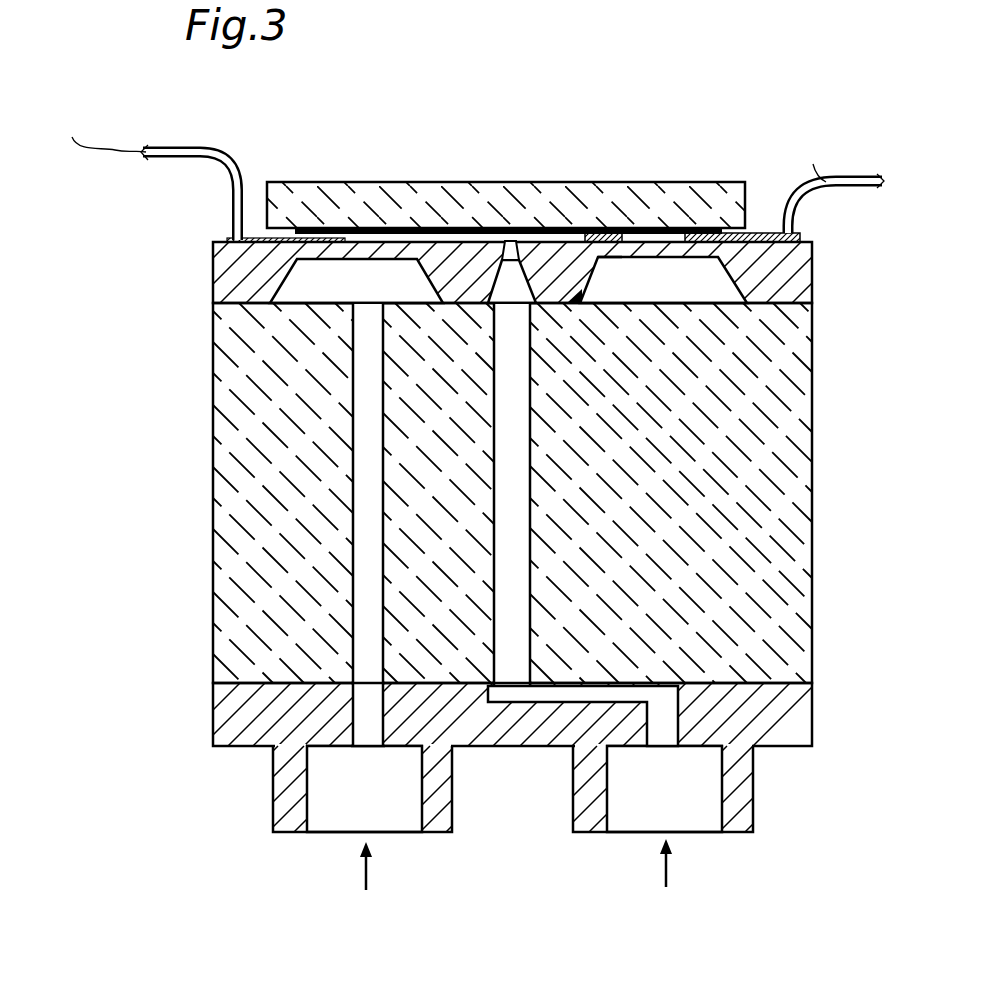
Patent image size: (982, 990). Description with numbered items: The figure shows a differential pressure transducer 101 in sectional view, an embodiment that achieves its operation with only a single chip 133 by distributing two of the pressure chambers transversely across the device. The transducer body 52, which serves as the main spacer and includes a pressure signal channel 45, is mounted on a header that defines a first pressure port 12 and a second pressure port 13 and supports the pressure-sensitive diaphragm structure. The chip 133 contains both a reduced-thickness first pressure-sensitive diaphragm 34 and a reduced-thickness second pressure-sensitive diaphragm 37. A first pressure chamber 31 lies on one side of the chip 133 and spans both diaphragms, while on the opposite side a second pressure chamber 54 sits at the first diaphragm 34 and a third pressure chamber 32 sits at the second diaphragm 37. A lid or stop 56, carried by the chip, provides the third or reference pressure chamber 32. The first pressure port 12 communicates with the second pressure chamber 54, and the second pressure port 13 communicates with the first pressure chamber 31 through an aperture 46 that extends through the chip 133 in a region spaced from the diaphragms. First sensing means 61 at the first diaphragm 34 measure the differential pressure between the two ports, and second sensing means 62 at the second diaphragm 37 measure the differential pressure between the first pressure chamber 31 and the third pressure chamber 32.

The differential pressure transducer 101 is at (205, 494).
The transducer body 52 is at (797, 411).
The chip 133 is at (213, 279).
The lid or stop 56 is at (338, 182).
The first pressure chamber 31 is at (453, 229).
The first pressure-sensitive diaphragm 34 is at (372, 256).
The pressure signal channel 45 is at (518, 523).
The first pressure port 12 is at (340, 820).
The second pressure port 13 is at (640, 822).
The second pressure chamber 54 is at (338, 292).
The third pressure chamber 32 is at (713, 289).
The second pressure-sensitive diaphragm 37 is at (626, 258).
The aperture 46 is at (514, 261).
The first sensing means 61 is at (256, 240).
The second sensing means 62 is at (752, 233).